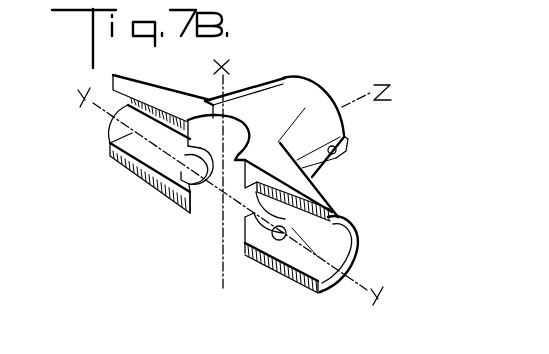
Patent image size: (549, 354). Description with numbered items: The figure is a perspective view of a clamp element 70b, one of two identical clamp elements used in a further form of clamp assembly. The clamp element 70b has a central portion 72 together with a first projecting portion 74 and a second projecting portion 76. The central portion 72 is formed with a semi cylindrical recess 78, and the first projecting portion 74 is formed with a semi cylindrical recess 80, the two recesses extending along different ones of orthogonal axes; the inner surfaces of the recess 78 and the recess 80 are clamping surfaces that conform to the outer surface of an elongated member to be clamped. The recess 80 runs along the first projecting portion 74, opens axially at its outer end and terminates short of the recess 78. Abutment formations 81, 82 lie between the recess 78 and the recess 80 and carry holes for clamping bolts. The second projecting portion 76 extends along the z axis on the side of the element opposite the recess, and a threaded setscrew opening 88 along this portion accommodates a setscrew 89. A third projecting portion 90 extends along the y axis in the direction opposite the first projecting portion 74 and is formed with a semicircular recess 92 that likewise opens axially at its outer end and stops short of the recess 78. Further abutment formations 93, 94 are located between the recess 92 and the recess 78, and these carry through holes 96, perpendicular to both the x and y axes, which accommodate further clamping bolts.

The clamp element 70b is at (349, 199).
The central portion 72 is at (245, 100).
The first projecting portion 74 is at (156, 89).
The second projecting portion 76 is at (283, 80).
The semi cylindrical recess 78 is at (202, 206).
The semi cylindrical recess 80 is at (123, 133).
The abutment formation 81 is at (160, 190).
The abutment formation 82 is at (178, 202).
The threaded setscrew opening 88 is at (343, 128).
The setscrew 89 is at (333, 154).
The third projecting portion 90 is at (352, 216).
The semicircular recess 92 is at (334, 276).
The abutment formation 93 is at (253, 137).
The abutment formation 94 is at (233, 233).
The through holes 96 is at (282, 242).